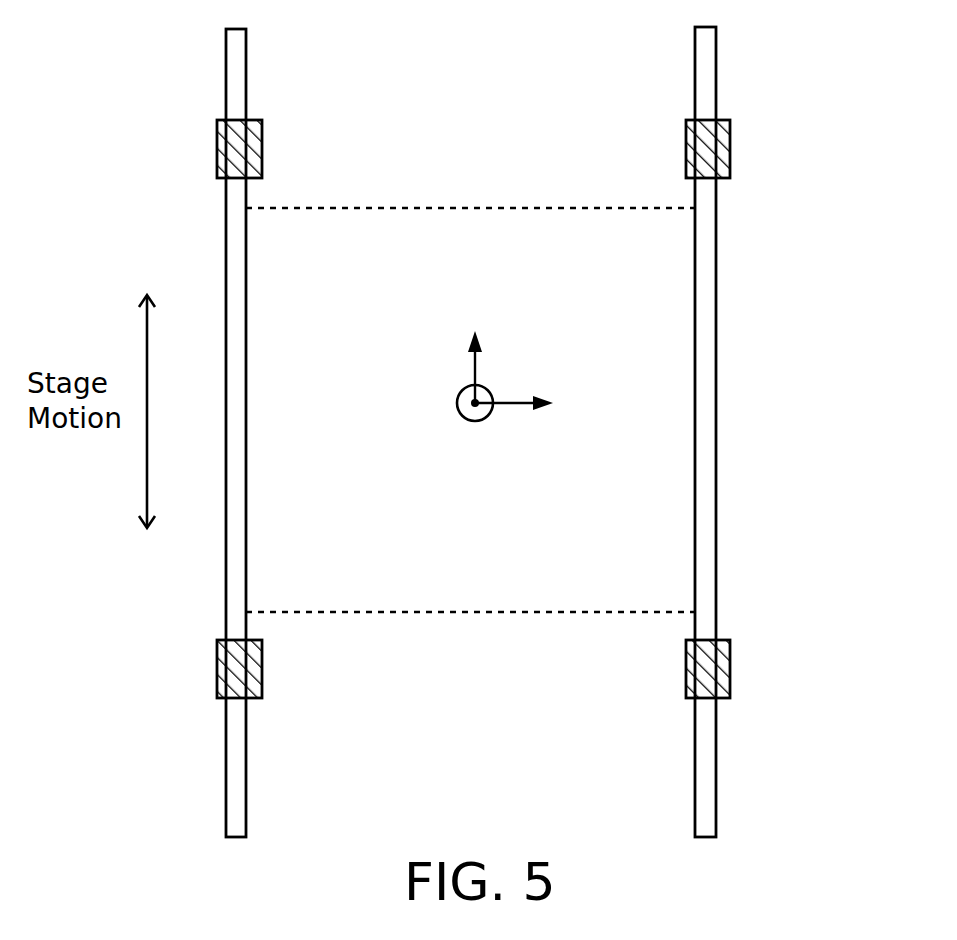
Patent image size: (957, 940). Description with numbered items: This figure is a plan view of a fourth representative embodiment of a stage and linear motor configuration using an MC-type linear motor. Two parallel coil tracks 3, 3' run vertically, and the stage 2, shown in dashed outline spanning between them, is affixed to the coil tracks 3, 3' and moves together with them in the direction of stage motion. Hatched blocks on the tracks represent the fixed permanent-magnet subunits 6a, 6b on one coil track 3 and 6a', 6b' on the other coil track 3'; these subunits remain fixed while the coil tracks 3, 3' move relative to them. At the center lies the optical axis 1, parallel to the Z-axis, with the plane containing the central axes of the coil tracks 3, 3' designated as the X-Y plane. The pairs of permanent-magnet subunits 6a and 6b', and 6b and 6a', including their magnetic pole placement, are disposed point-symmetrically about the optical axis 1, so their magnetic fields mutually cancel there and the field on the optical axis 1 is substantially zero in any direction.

The optical axis 1 is at (479, 399).
The stage 2 is at (461, 208).
The coil track 3 is at (742, 432).
The coil track 3' is at (196, 432).
The fixed permanent-magnet subunit 6a is at (750, 134).
The fixed permanent-magnet subunit 6a' is at (189, 140).
The fixed permanent-magnet subunit 6b is at (754, 666).
The fixed permanent-magnet subunit 6b' is at (187, 667).